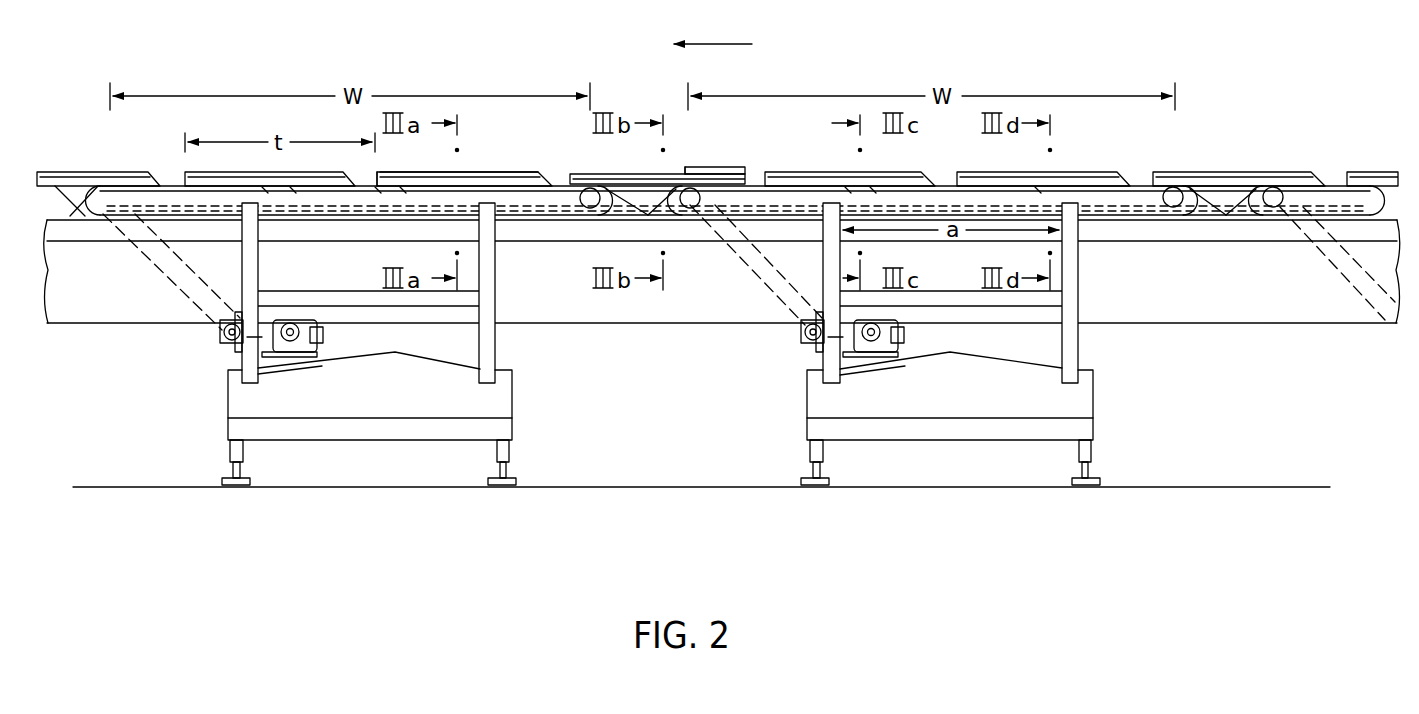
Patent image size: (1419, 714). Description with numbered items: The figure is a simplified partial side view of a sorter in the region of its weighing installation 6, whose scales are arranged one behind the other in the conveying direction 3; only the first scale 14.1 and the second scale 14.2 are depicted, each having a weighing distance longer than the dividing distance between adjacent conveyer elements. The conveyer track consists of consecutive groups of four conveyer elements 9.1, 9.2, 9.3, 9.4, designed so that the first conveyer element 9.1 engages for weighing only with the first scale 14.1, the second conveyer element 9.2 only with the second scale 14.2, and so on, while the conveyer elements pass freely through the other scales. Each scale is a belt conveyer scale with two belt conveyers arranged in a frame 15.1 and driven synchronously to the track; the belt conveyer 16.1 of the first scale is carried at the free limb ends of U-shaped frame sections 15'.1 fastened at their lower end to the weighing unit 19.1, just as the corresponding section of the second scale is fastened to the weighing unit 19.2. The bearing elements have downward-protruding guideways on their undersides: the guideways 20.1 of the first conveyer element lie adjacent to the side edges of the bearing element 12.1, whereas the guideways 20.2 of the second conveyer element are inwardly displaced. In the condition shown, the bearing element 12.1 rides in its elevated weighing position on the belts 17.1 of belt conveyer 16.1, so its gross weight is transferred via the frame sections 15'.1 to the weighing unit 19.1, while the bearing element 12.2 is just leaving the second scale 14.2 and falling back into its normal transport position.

The conveying direction 3 is at (715, 44).
The weighing installation 6 is at (206, 398).
The first conveyer element 9.1 is at (437, 165).
The second conveyer element 9.2 is at (603, 165).
The third conveyer element 9.3 is at (85, 165).
The fourth conveyer element 9.4 is at (190, 168).
The bearing element of the first conveyer element 12.1 is at (488, 171).
The bearing element of the second conveyer element 12.2 is at (675, 170).
The first scale 14.1 is at (519, 415).
The second scale 14.2 is at (1101, 399).
The frame 15.1 is at (196, 208).
The frame section 15'.1 is at (660, 293).
The belt conveyer 16.1 is at (101, 218).
The belts 17.1 is at (356, 193).
The weighing unit 19.1 is at (367, 403).
The weighing unit 19.2 is at (938, 405).
The guideways of the first conveyer element 20.1 is at (428, 179).
The guideways of the second conveyer element 20.2 is at (730, 171).